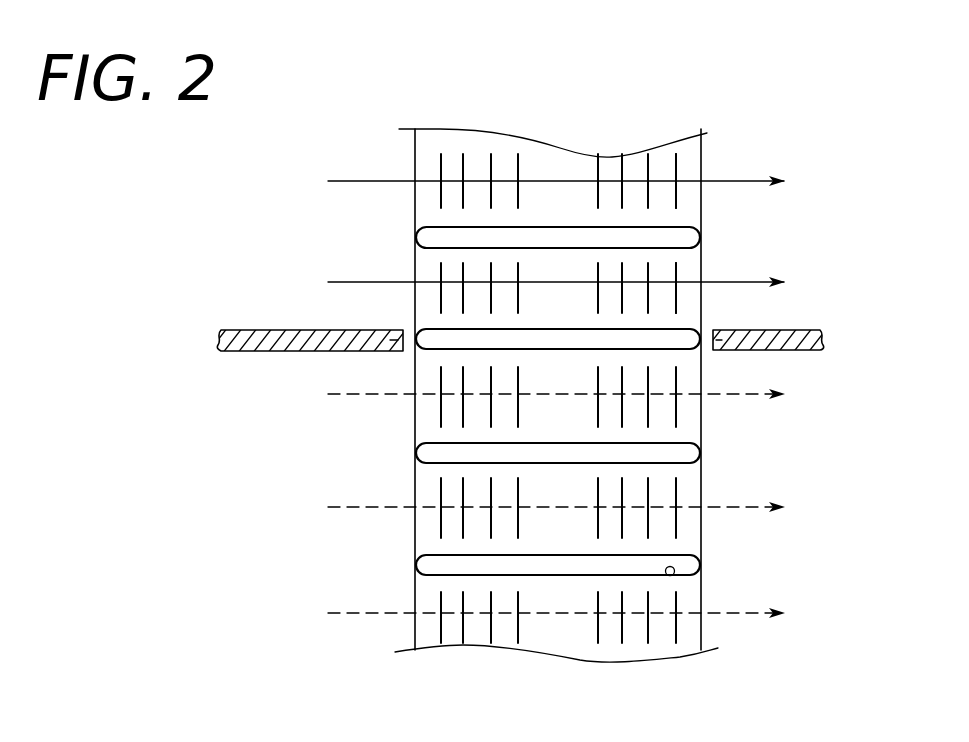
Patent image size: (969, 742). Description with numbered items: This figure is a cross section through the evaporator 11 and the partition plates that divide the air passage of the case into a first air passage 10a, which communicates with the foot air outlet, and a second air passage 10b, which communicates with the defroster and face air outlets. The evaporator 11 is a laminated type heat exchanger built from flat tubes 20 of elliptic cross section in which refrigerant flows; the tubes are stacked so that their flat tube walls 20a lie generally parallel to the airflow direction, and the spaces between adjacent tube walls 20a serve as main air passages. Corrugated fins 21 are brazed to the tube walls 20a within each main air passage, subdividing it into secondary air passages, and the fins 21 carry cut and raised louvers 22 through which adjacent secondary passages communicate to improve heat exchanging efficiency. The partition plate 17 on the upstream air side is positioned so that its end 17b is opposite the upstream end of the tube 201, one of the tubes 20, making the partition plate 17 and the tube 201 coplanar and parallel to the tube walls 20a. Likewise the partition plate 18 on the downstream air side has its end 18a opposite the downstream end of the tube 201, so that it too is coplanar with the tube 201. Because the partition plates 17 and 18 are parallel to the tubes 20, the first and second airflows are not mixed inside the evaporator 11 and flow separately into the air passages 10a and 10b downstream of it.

The evaporator 11 is at (705, 112).
The first air passage 10a is at (304, 207).
The second air passage 10b is at (267, 532).
The partition plate 17 is at (232, 337).
The end of partition plate 17b is at (390, 340).
The partition plate 18 is at (800, 330).
The end of partition plate 18a is at (718, 338).
The tube 201 is at (455, 343).
The corrugated fins 21 is at (662, 165).
The louvers 22 is at (681, 269).
The tubes 20 is at (688, 562).
The flat tube walls 20a is at (674, 575).